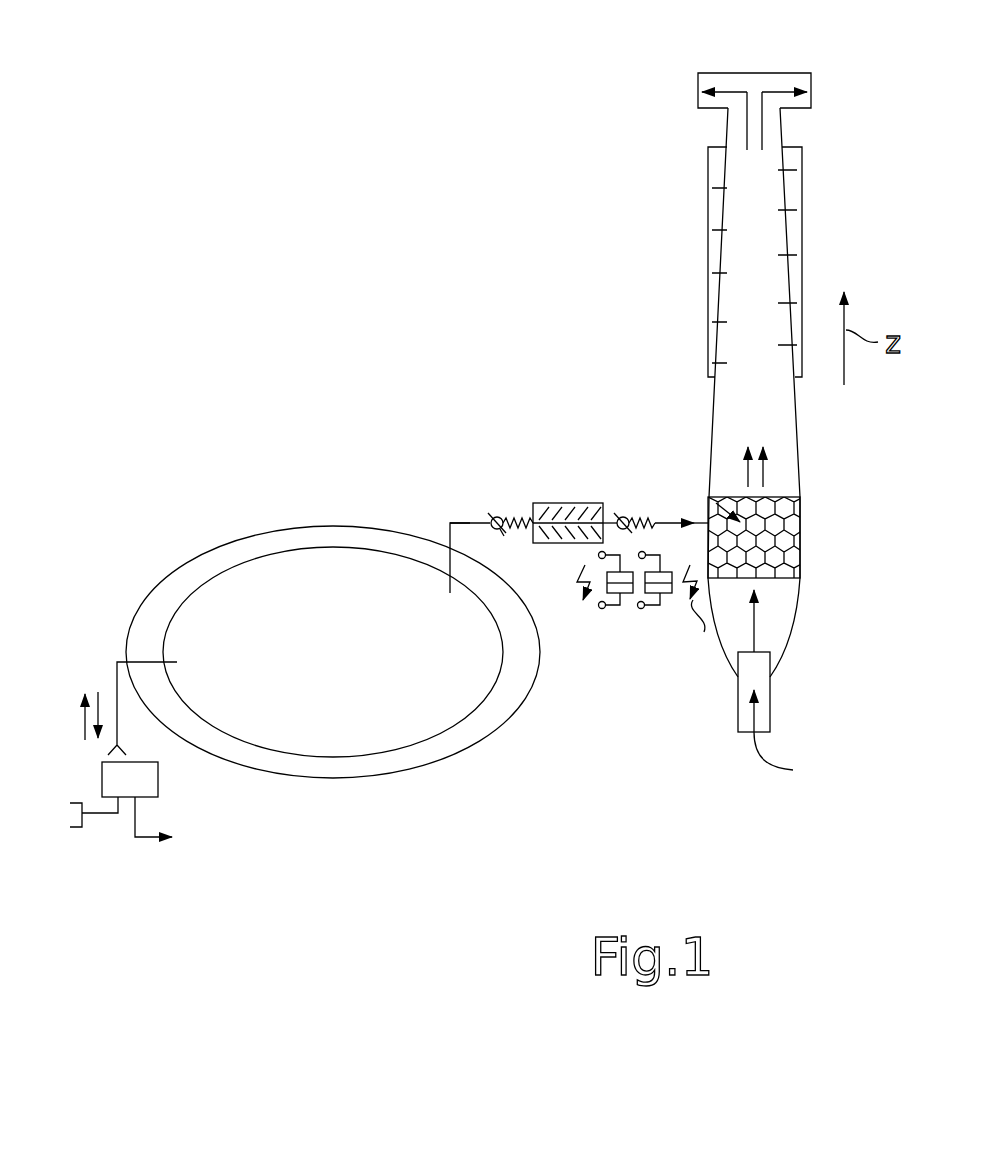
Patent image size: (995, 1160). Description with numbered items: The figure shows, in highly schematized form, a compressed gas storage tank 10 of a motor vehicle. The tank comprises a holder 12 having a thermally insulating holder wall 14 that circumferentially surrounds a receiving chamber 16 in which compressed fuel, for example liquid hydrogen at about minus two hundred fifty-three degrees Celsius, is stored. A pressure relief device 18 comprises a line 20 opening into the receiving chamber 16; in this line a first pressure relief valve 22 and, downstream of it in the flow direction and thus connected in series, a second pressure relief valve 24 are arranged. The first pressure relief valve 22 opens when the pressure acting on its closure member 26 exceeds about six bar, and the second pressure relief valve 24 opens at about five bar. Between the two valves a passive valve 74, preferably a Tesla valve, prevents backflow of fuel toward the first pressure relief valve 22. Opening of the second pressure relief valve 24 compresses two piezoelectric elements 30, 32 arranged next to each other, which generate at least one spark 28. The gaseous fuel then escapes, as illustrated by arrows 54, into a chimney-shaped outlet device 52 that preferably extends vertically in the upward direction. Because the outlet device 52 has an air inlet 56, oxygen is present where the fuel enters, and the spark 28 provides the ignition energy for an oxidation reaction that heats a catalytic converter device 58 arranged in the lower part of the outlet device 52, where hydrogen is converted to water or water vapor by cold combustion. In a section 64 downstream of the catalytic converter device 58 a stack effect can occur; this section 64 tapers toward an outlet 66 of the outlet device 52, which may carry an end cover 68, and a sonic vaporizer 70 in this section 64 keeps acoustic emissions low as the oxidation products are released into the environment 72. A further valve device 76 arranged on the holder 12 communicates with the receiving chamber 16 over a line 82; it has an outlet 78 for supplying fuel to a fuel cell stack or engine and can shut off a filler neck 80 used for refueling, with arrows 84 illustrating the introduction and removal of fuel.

The compressed gas storage tank 10 is at (180, 205).
The holder 12 is at (252, 532).
The holder wall 14 is at (325, 543).
The receiving chamber 16 is at (310, 643).
The pressure relief device 18 is at (445, 460).
The line 20 is at (478, 522).
The first pressure relief valve 22 is at (504, 500).
The second pressure relief valve 24 is at (637, 500).
The closure member 26 is at (504, 536).
The spark 28 is at (576, 584).
The piezoelectric element 30 is at (603, 613).
The piezoelectric element 32 is at (648, 613).
The outlet device 52 is at (708, 393).
The arrows 54 is at (670, 518).
The air inlet 56 is at (773, 705).
The catalytic converter device 58 is at (806, 497).
The section 64 is at (770, 392).
The outlet 66 is at (695, 97).
The end cover 68 is at (757, 73).
The sonic vaporizer 70 is at (801, 189).
The environment 72 is at (582, 193).
The valve 74 is at (566, 503).
The valve device 76 is at (102, 778).
The outlet 78 is at (137, 808).
The filler neck 80 is at (100, 815).
The line 82 is at (113, 683).
The arrows 84 is at (80, 718).